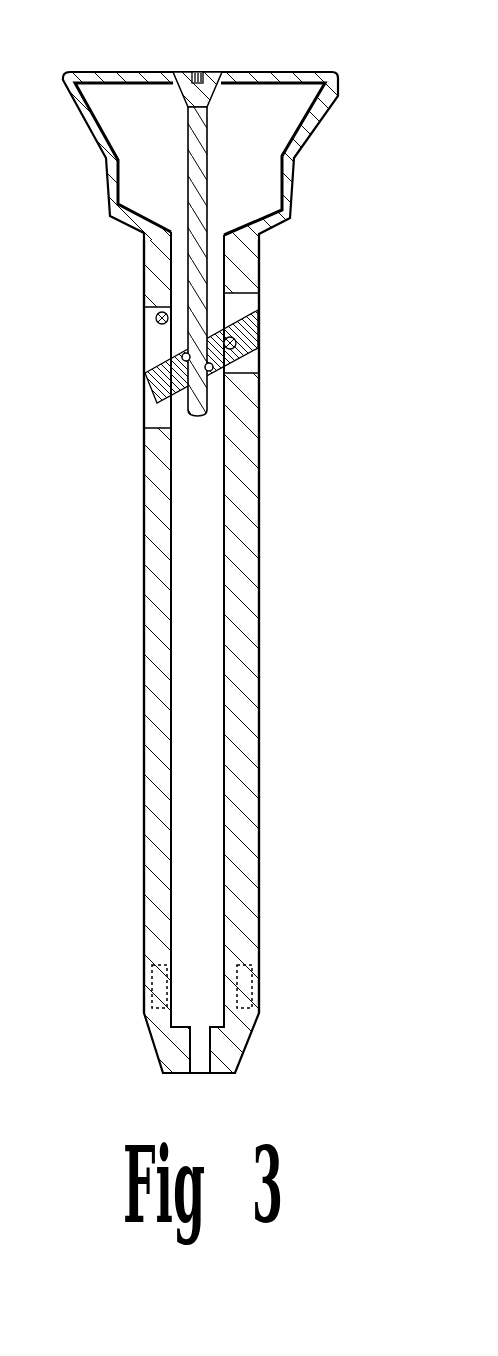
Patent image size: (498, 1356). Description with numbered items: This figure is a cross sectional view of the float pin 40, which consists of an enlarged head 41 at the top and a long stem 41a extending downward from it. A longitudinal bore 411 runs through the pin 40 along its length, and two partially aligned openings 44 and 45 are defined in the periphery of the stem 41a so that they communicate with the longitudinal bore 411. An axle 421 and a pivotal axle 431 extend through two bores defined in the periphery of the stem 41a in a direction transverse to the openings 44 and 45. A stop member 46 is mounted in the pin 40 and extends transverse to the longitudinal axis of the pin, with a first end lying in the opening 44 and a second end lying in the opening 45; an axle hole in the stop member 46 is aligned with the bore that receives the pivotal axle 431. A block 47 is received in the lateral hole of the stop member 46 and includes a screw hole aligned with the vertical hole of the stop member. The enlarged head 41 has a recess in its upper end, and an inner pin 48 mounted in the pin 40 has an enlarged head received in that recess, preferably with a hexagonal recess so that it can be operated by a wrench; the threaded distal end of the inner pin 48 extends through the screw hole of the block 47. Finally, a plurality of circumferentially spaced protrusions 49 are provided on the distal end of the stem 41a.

The float pin 40 is at (283, 488).
The enlarged head 41 is at (267, 82).
The stem 41a is at (258, 622).
The longitudinal bore 411 is at (226, 762).
The axle 421 is at (156, 318).
The pivotal axle 431 is at (237, 342).
The opening 44 is at (248, 364).
The opening 45 is at (150, 347).
The stop member 46 is at (252, 318).
The block 47 is at (213, 383).
The inner pin 48 is at (200, 169).
The protrusions 49 is at (255, 982).